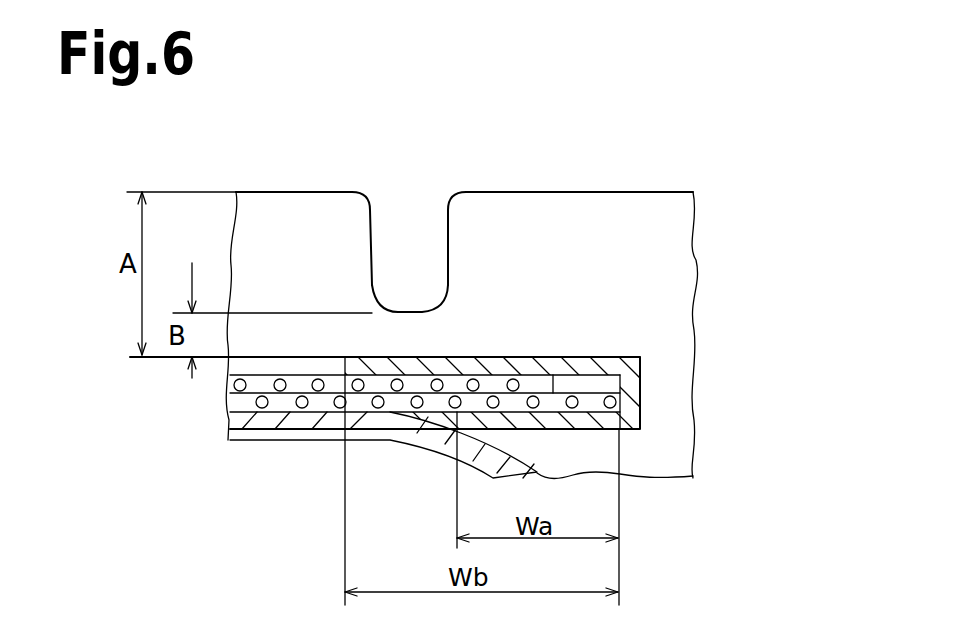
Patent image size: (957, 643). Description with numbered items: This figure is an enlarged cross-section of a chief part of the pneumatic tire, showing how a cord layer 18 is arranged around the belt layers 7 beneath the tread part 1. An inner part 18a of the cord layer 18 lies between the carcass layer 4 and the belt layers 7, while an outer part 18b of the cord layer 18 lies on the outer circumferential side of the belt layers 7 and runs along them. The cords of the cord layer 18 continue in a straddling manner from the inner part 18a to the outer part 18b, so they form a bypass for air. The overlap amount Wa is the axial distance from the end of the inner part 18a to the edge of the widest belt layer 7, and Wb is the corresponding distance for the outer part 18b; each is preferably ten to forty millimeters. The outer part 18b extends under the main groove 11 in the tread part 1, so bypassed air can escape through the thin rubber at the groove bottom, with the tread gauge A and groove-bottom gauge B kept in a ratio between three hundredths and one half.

The tread part 1 is at (322, 190).
The main groove 11 is at (370, 233).
The cord layer 18 is at (596, 355).
The outer part of the cord layer 18b is at (520, 364).
The inner part of the cord layer 18a is at (620, 475).
The belt layers 7 is at (287, 393).
The carcass layer 4 is at (405, 425).